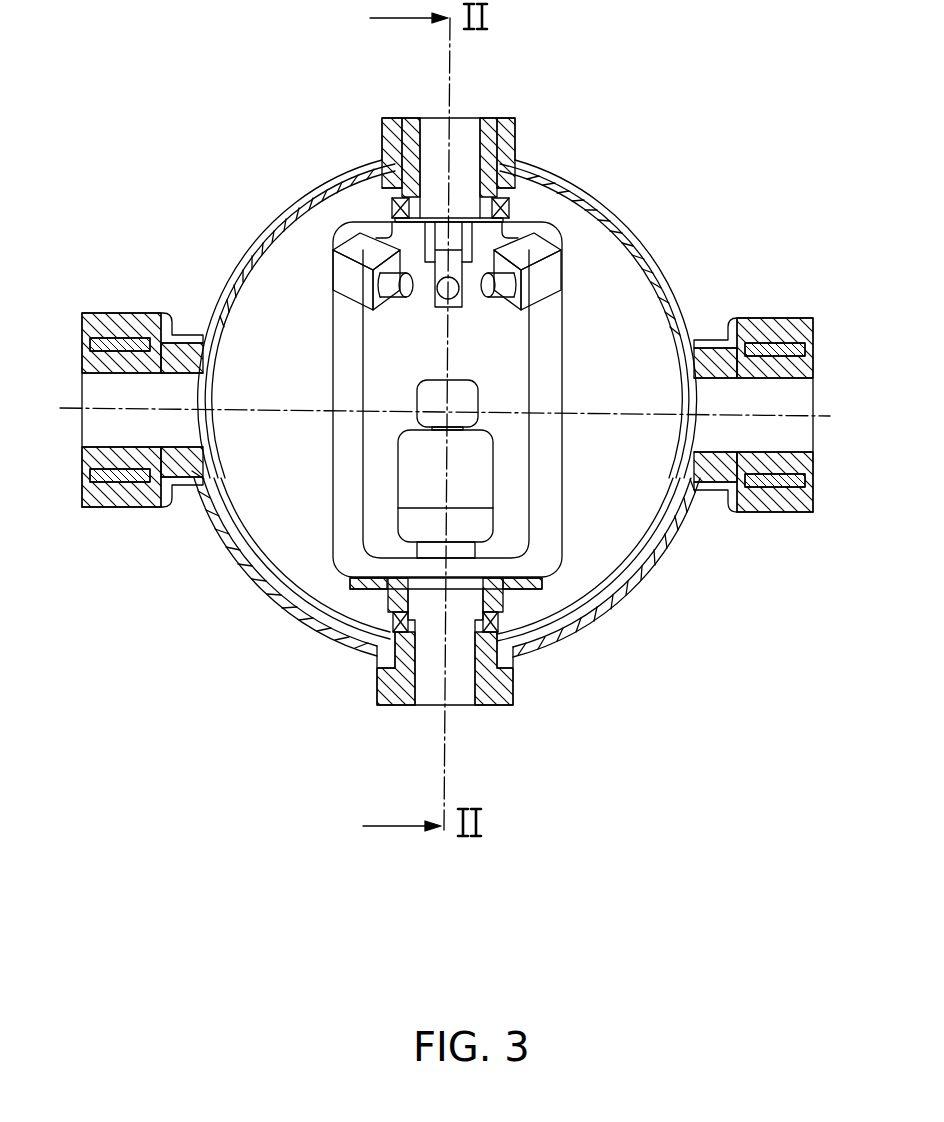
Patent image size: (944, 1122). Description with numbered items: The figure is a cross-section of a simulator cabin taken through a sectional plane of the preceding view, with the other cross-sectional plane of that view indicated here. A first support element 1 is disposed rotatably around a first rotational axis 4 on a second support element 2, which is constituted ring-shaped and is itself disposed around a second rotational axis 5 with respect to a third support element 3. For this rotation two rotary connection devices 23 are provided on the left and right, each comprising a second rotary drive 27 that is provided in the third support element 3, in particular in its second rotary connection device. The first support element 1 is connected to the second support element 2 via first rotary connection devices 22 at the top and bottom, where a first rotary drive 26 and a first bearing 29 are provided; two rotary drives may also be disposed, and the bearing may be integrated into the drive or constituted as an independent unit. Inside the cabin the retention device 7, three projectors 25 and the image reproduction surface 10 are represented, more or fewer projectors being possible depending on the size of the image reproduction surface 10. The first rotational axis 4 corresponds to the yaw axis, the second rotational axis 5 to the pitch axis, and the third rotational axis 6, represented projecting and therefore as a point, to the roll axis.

The first support element 1 is at (543, 235).
The second support element 2 is at (675, 300).
The third support element 3 is at (137, 315).
The first rotational axis 4 is at (450, 85).
The second rotational axis 5 is at (637, 415).
The third rotational axis 6 is at (447, 413).
The retention device 7 is at (418, 525).
The image reproduction surface 10 is at (262, 588).
The first rotary connection devices 22 is at (462, 158).
The rotary connection devices 23 is at (92, 352).
The projectors 25 is at (443, 282).
The first rotary drive 26 is at (405, 188).
The second rotary drive 27 is at (115, 478).
The first bearing 29 is at (530, 648).